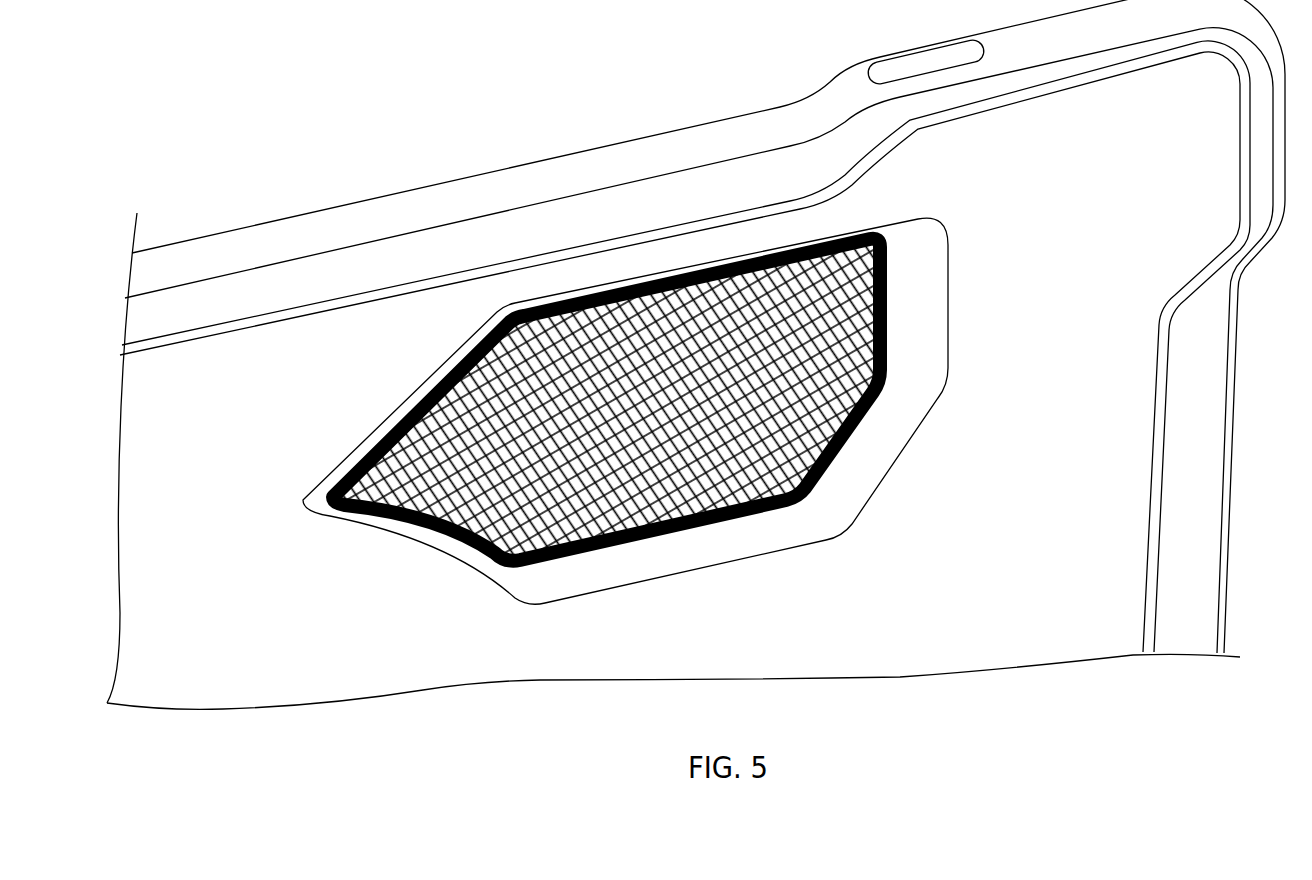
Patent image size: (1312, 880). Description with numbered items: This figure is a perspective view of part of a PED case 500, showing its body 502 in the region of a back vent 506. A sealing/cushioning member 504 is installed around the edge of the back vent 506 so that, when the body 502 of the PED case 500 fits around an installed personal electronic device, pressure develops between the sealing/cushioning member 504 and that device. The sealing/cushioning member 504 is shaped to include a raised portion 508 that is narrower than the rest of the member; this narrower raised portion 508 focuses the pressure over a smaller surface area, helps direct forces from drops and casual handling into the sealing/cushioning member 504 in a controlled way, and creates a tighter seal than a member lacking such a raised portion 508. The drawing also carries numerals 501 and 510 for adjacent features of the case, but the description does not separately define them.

The PED case 500 is at (165, 114).
The outer edge of door panel 501 is at (347, 203).
The body 502 is at (585, 170).
The sealing/cushioning member 504 is at (668, 403).
The back vent 506 is at (890, 345).
The raised portion 508 is at (890, 280).
The door panel surface 510 is at (1052, 518).